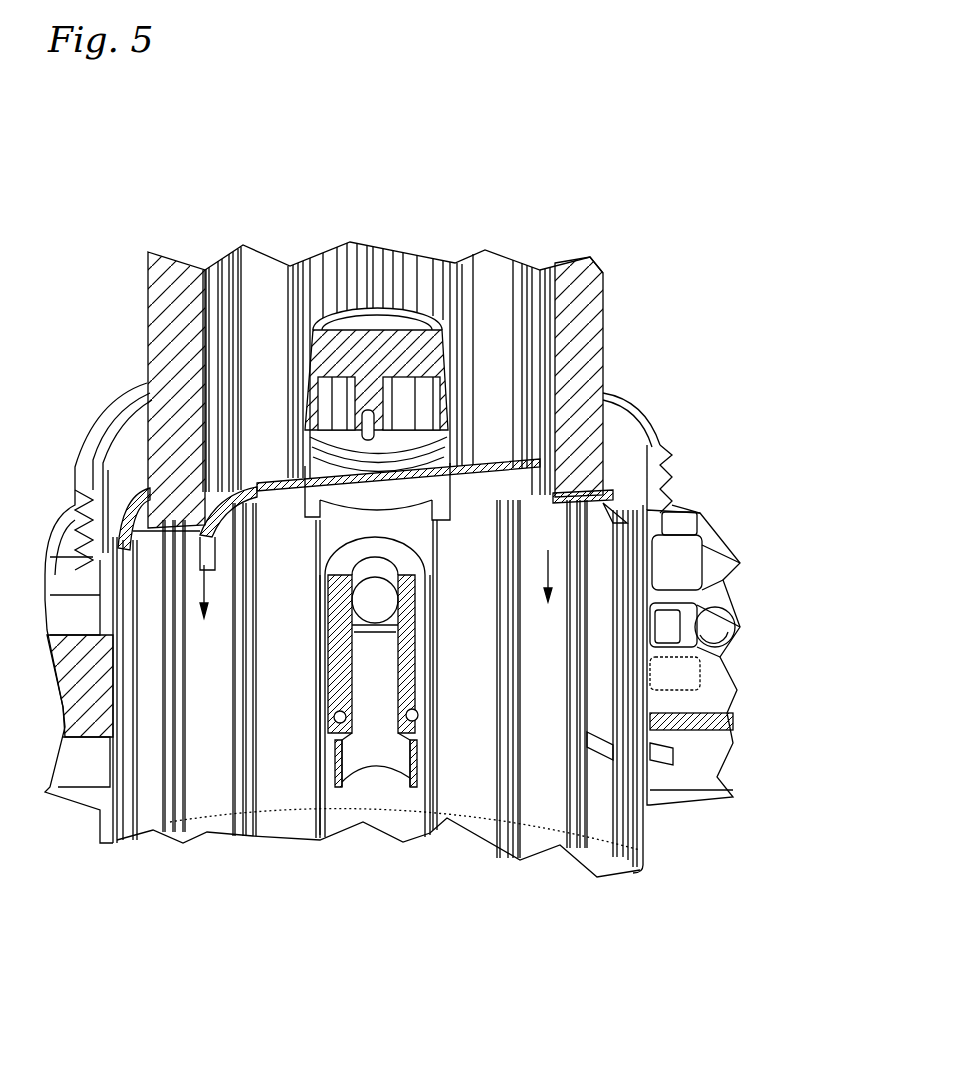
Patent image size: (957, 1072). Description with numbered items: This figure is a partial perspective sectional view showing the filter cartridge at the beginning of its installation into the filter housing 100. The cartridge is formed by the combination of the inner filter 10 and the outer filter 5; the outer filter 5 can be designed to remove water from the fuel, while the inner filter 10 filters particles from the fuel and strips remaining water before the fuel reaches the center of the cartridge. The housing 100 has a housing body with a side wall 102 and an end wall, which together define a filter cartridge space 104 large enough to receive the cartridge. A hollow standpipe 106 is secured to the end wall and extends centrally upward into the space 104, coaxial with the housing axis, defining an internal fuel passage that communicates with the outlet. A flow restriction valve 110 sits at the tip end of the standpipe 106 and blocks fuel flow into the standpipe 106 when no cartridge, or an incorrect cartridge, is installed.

The outer filter 5 is at (608, 330).
The inner filter 10 is at (522, 290).
The filter housing 100 is at (683, 570).
The side wall 102 is at (712, 695).
The filter cartridge space 104 is at (540, 673).
The standpipe 106 is at (446, 818).
The flow restriction valve 110 is at (320, 627).